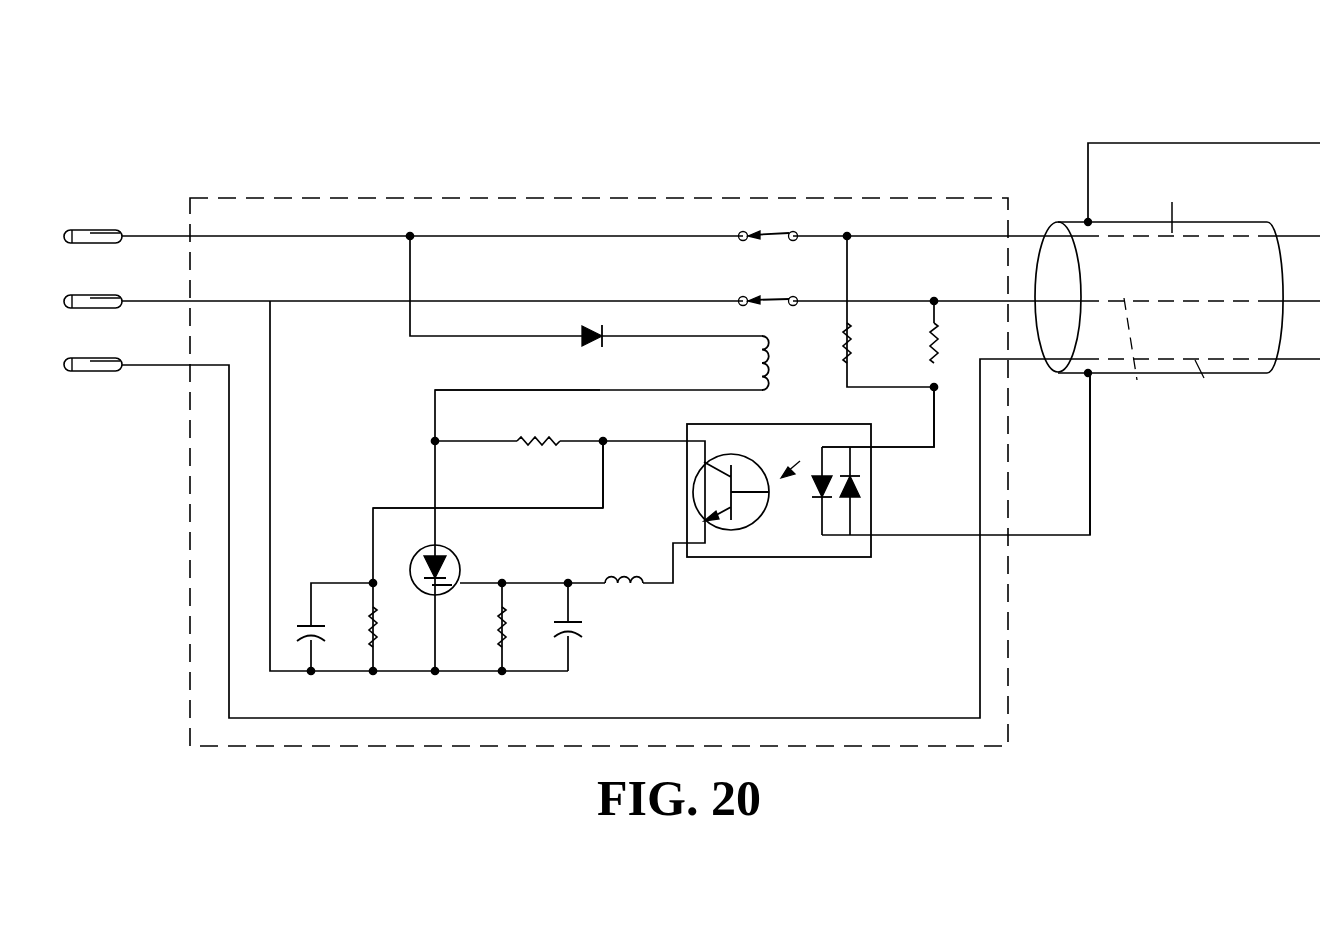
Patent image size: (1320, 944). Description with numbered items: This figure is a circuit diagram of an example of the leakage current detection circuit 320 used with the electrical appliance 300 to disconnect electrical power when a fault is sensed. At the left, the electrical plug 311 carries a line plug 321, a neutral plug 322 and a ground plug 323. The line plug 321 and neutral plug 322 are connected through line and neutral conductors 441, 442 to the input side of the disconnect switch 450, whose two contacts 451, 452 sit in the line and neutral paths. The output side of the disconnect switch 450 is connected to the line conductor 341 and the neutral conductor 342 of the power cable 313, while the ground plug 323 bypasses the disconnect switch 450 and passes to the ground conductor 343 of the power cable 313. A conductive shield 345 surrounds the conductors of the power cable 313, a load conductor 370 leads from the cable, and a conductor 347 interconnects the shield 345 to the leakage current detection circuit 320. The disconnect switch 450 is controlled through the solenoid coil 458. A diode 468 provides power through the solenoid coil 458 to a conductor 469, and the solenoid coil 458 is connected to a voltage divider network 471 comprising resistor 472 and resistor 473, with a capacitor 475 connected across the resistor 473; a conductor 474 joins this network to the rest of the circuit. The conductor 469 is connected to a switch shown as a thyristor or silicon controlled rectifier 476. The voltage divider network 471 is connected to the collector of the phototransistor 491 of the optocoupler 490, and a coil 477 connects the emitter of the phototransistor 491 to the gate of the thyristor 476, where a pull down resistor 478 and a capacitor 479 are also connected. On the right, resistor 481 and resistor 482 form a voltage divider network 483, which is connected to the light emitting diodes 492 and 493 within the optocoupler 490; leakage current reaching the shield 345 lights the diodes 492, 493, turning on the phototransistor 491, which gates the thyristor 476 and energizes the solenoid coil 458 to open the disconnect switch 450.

The electrical appliance 300 is at (552, 140).
The electrical plug 311 is at (112, 336).
The power cable 313 is at (1222, 222).
The leakage current detection circuit 320 is at (338, 197).
The line plug 321 is at (95, 233).
The neutral plug 322 is at (95, 298).
The ground plug 323 is at (95, 361).
The line conductor 341 is at (1180, 204).
The neutral conductor 342 is at (1137, 380).
The ground conductor 343 is at (1204, 378).
The conductive shield 345 is at (1115, 222).
The conductor 347 is at (1091, 456).
The load conductor 370 is at (1212, 141).
The line conductor 441 is at (506, 237).
The neutral conductor 442 is at (575, 301).
The disconnect switch 450 is at (750, 254).
The line switch contact 451 is at (760, 240).
The neutral switch contact 452 is at (762, 302).
The solenoid coil 458 is at (762, 363).
The diode 468 is at (583, 344).
The conductor 469 is at (435, 391).
The voltage divider network 471 is at (603, 441).
The resistor 472 is at (522, 444).
The resistor 473 is at (371, 613).
The conductor 474 is at (400, 508).
The capacitor 475 is at (305, 626).
The silicon controlled rectifier 476 is at (458, 553).
The coil 477 is at (608, 575).
The pull down resistor 478 is at (504, 625).
The capacitor 479 is at (572, 623).
The resistor 481 is at (848, 342).
The resistor 482 is at (933, 347).
The voltage divider network 483 is at (900, 448).
The optocoupler 490 is at (757, 425).
The phototransistor 491 is at (736, 531).
The light emitting diode 492 is at (858, 490).
The light emitting diode 493 is at (815, 494).